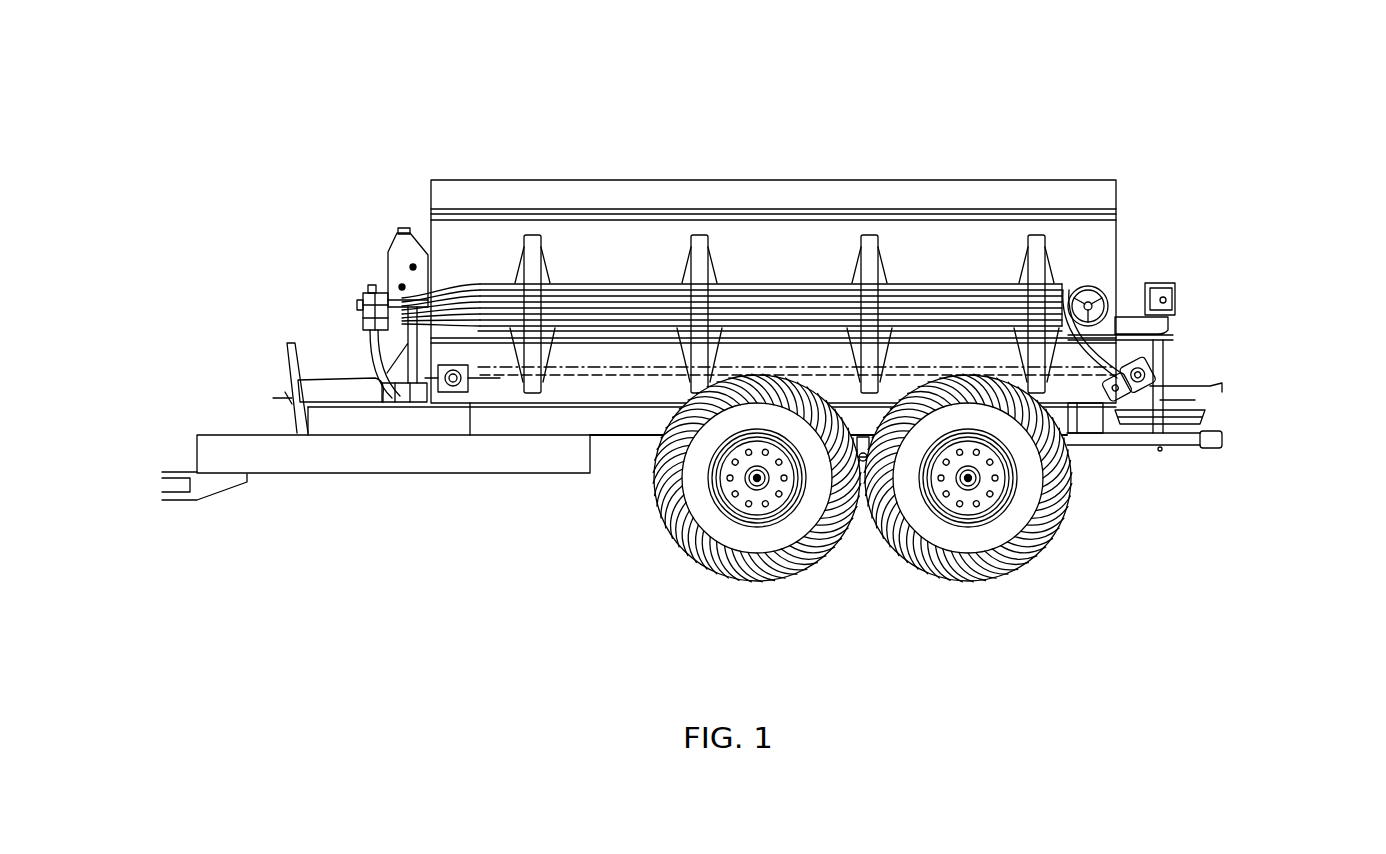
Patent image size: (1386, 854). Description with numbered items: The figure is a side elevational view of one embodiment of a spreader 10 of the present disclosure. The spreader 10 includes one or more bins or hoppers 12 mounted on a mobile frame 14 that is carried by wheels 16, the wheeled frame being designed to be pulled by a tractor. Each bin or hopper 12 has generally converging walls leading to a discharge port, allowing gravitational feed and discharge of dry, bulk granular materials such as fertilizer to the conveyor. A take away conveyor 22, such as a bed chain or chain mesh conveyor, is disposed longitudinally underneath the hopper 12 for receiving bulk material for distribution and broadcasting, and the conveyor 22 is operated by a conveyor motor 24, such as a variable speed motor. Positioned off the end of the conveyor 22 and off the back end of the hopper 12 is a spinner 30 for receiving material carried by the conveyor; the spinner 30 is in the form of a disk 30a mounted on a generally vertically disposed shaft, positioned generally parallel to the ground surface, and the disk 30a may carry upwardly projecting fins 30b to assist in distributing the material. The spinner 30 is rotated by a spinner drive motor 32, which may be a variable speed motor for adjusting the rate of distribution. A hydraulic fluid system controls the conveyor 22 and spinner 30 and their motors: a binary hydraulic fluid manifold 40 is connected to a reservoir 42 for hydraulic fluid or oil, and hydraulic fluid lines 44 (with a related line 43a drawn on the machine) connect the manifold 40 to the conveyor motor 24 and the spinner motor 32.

The spreader 10 is at (740, 158).
The bin or hopper 12 is at (843, 178).
The mobile frame 14 is at (643, 437).
The wheels 16 is at (928, 578).
The take away conveyor 22 is at (1072, 381).
The conveyor motor 24 is at (1121, 405).
The spinner 30 is at (1215, 421).
The disk 30a is at (1183, 437).
The upwardly projecting fins 30b is at (1213, 410).
The spinner drive motor 32 is at (1168, 282).
The binary hydraulic fluid manifold 40 is at (358, 292).
The reservoir 42 is at (390, 236).
The hydraulic line 43a is at (578, 332).
The hydraulic fluid lines 44 is at (620, 290).